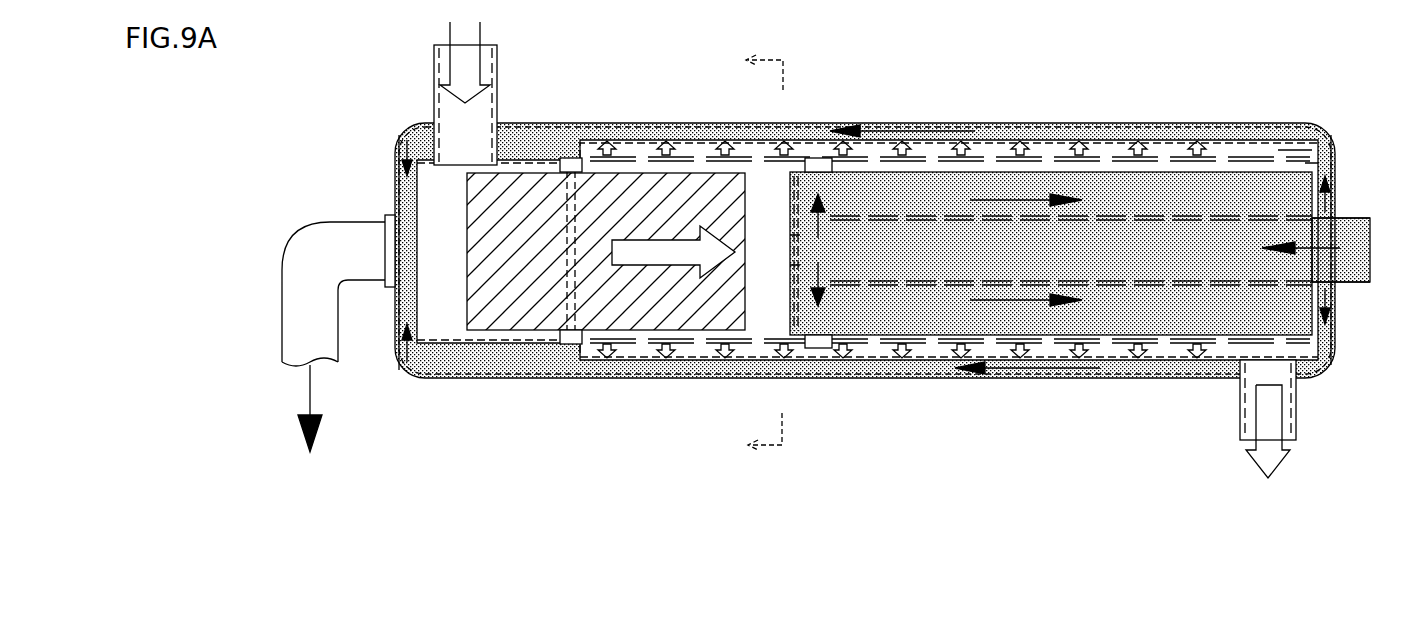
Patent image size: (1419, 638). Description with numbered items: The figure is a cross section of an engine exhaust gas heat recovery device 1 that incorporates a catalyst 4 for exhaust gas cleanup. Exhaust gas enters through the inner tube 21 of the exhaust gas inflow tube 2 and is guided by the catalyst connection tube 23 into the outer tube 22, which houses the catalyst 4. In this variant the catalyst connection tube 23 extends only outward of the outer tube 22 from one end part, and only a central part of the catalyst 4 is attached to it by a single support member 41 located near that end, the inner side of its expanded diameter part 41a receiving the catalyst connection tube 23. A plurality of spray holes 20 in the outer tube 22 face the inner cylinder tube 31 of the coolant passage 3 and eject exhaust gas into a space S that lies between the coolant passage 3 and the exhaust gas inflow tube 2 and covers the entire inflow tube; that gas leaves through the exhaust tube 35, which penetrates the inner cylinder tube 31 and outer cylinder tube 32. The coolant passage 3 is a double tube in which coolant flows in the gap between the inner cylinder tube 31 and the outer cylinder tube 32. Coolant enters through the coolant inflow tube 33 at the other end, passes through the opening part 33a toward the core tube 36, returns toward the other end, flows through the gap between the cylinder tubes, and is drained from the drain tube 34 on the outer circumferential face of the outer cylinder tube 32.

The engine exhaust gas heat recovery device 1 is at (306, 77).
The exhaust gas inflow tube 2 is at (745, 362).
The coolant passage 3 is at (1079, 237).
The catalyst 4 is at (606, 303).
The spray holes 20 is at (717, 152).
The inner tube 21 is at (437, 63).
The outer tube 22 is at (648, 345).
The catalyst connection tube 23 is at (497, 345).
The inner cylinder tube 31 is at (1150, 130).
The outer cylinder tube 32 is at (1090, 126).
The coolant inflow tube 33 is at (1350, 216).
The opening part 33a is at (822, 348).
The drain tube 34 is at (282, 330).
The exhaust tube 35 is at (1296, 420).
The core tube 36 is at (1277, 157).
The support member 41 is at (608, 342).
The expanded diameter part 41a is at (565, 350).
The space S is at (1250, 148).